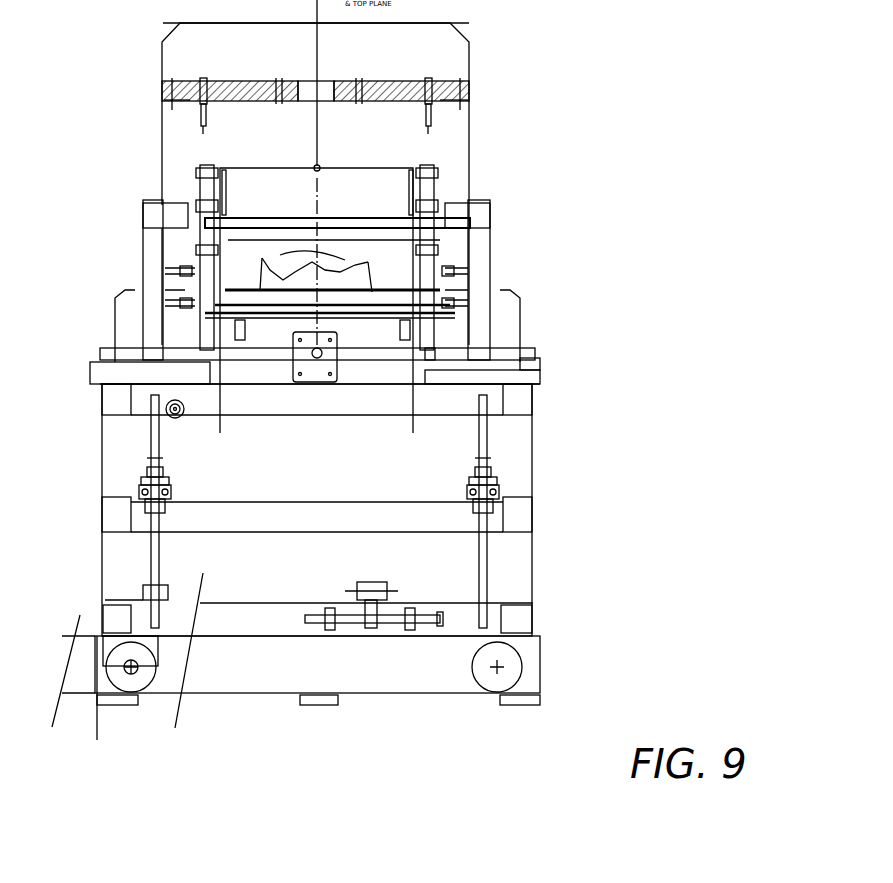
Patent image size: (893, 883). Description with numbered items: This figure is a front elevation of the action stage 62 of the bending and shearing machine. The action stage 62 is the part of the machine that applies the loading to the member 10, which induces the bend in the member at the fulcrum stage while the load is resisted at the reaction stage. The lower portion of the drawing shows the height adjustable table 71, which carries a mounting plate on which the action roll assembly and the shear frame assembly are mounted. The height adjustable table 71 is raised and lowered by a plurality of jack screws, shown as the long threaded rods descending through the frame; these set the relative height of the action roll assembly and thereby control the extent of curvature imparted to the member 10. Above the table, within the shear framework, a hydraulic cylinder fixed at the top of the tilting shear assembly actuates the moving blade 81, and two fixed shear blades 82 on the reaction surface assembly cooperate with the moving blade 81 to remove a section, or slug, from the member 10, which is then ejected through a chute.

The member 10 is at (258, 270).
The action stage 62 is at (515, 80).
The height adjustable table 71 is at (533, 487).
The moving blade 81 is at (345, 183).
The fixed shear blades 82 is at (455, 212).